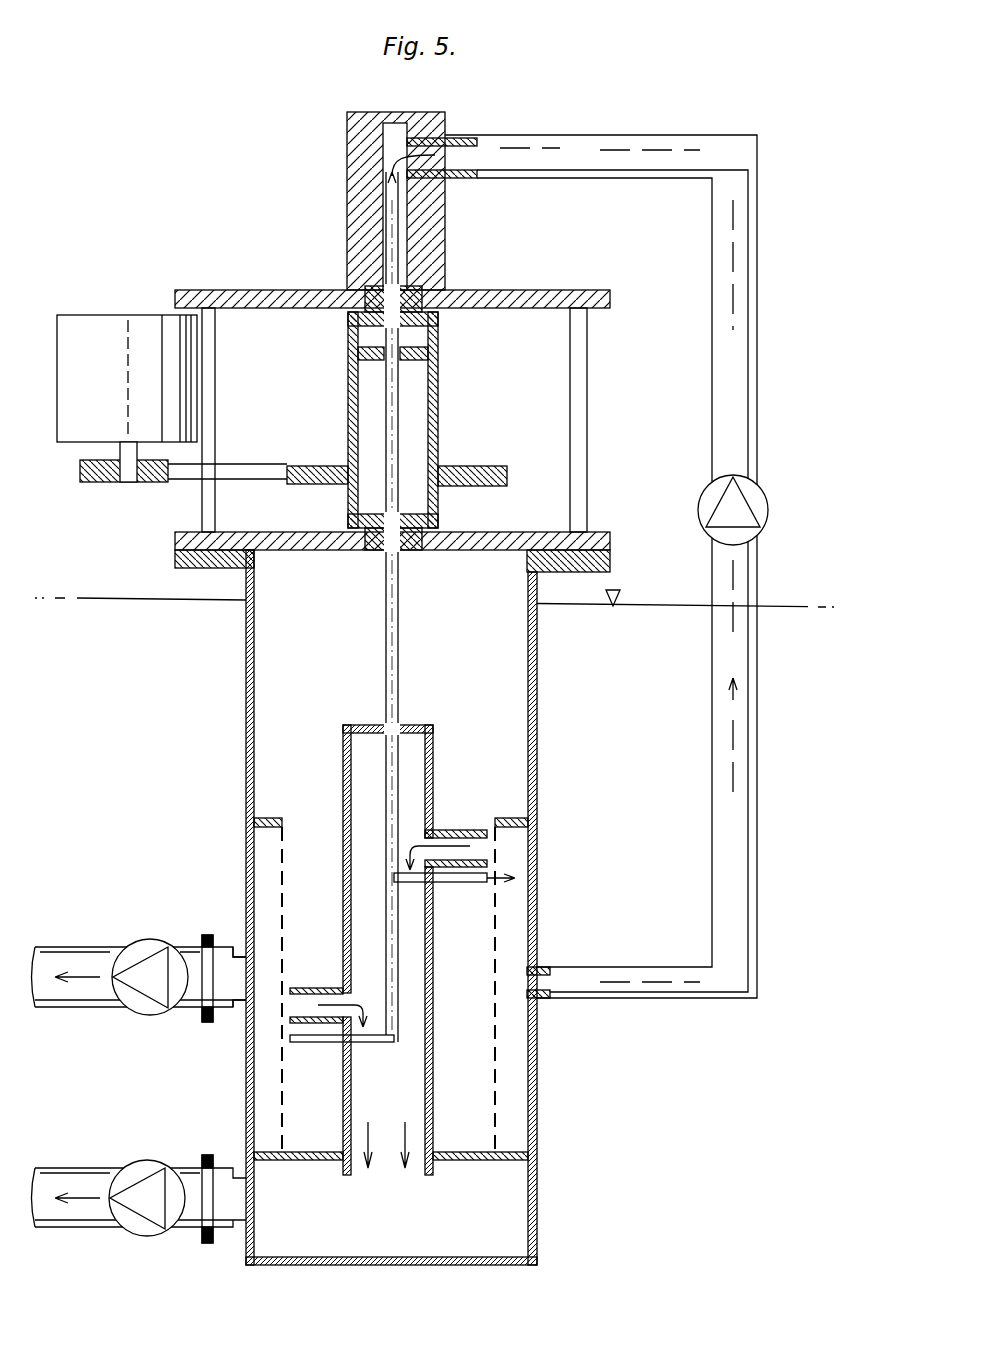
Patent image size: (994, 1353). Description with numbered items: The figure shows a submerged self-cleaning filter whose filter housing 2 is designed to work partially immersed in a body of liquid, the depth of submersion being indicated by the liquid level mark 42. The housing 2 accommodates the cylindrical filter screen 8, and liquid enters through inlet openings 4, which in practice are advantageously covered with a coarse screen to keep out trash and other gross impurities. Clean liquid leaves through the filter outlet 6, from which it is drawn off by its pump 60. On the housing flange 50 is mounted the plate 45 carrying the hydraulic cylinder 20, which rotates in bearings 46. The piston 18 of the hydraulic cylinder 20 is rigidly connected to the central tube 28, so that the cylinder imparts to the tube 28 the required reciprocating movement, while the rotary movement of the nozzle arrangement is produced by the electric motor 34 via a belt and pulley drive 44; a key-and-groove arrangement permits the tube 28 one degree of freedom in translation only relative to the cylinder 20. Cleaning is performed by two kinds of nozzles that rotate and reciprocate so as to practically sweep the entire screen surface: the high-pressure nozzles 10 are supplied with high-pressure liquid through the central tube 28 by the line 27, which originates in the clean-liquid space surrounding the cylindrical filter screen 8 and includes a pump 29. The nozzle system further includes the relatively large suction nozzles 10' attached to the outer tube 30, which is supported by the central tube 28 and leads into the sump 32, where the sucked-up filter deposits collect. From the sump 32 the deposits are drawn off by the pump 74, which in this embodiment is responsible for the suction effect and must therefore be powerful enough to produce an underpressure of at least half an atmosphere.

The filter housing 2 is at (246, 851).
The inlet openings 4 is at (246, 736).
The filter outlet 6 is at (240, 992).
The cylindrical filter screen 8 is at (282, 890).
The high-pressure nozzles 10 is at (402, 993).
The suction nozzles 10' is at (394, 896).
The piston 18 is at (350, 363).
The hydraulic cylinder 20 is at (438, 406).
The line 27 is at (722, 861).
The central tube 28 is at (388, 655).
The pump 29 is at (755, 497).
The outer tube 30 is at (433, 1080).
The sump 32 is at (320, 1218).
The electric motor 34 is at (100, 330).
The liquid level mark 42 is at (620, 590).
The belt and pulley drive 44 is at (287, 437).
The plate 45 is at (290, 538).
The bearings 46 is at (368, 296).
The housing flange 50 is at (190, 553).
The pump 60 is at (140, 950).
The pump 74 is at (140, 1165).